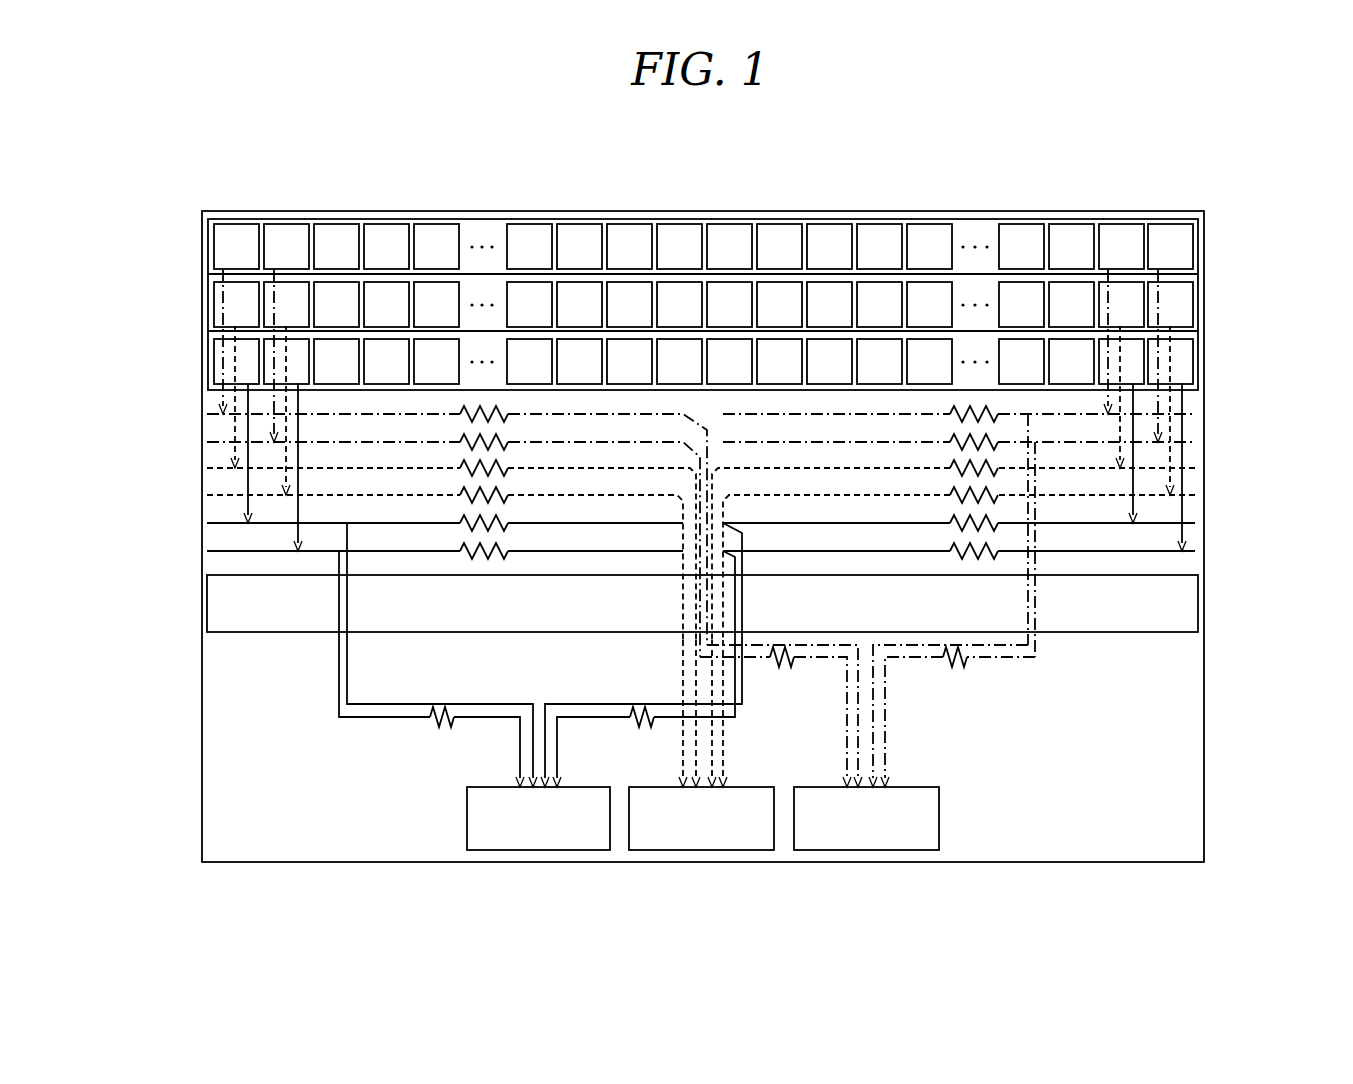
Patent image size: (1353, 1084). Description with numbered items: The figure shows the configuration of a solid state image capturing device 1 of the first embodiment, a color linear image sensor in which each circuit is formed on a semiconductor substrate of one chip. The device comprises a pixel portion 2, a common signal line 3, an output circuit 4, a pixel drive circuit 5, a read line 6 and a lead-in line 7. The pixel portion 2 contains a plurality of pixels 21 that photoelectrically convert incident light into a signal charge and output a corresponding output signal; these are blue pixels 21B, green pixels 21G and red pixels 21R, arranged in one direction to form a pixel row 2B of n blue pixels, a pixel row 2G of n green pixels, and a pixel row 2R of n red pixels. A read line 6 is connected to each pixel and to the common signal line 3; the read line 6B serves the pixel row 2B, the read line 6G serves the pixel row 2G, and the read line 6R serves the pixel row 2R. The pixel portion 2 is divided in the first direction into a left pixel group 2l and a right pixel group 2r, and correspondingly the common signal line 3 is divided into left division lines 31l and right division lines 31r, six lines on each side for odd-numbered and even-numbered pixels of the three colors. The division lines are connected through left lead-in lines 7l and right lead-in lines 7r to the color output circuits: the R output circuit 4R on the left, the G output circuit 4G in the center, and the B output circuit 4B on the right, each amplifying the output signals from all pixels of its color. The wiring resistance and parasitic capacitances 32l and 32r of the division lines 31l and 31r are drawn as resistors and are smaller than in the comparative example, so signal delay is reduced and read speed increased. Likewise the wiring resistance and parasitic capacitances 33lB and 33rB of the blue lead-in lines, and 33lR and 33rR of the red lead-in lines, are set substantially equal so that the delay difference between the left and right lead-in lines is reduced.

The solid state image capturing device 1 is at (1204, 216).
The pixel portion 2 is at (745, 257).
The pixel row 2B is at (1196, 247).
The pixel row 2G is at (1196, 304).
The pixel row 2R is at (1196, 360).
The pixel group 2l is at (212, 210).
The pixel group 2r is at (1196, 210).
The pixel 21 is at (468, 254).
The pixel 21B is at (438, 224).
The pixel 21G is at (459, 290).
The pixel 21R is at (459, 352).
The common signal line 3 is at (706, 549).
The division lines 31l is at (207, 551).
The division lines 31r is at (1195, 414).
The wiring resistance and parasitic capacitances 32l is at (451, 405).
The wiring resistance and parasitic capacitances 32r is at (941, 405).
The wiring resistance and parasitic capacitances 33lB is at (783, 652).
The wiring resistance and parasitic capacitances 33rB is at (955, 652).
The wiring resistance and parasitic capacitances 33lR is at (441, 712).
The wiring resistance and parasitic capacitances 33rR is at (642, 710).
The output circuit 4 is at (703, 868).
The R output circuit 4R is at (539, 850).
The G output circuit 4G is at (704, 850).
The B output circuit 4B is at (866, 846).
The pixel drive circuit 5 is at (1199, 601).
The read line 6 is at (653, 408).
The read line 6B is at (206, 276).
The read line 6G is at (206, 331).
The read line 6R is at (669, 456).
The lead-in line 7 is at (714, 713).
The lead-in line 7l is at (847, 711).
The lead-in line 7r is at (774, 713).